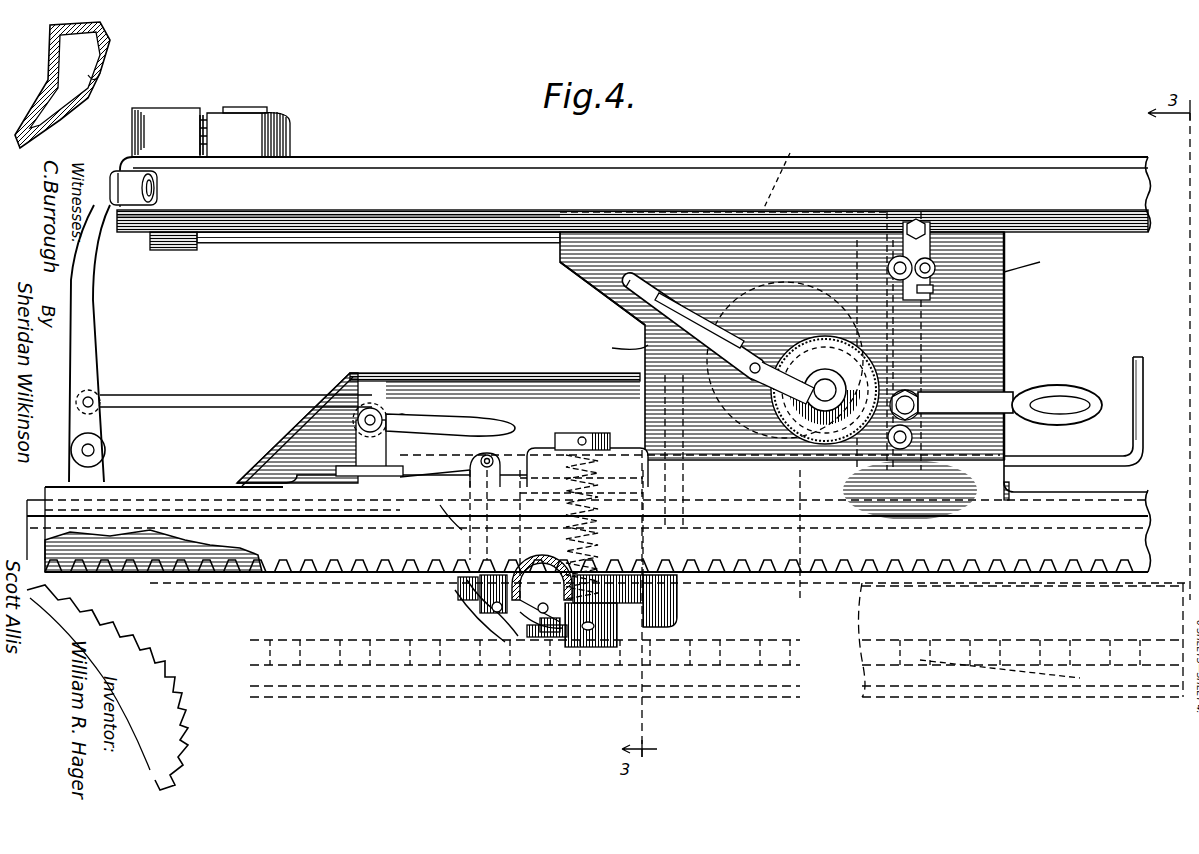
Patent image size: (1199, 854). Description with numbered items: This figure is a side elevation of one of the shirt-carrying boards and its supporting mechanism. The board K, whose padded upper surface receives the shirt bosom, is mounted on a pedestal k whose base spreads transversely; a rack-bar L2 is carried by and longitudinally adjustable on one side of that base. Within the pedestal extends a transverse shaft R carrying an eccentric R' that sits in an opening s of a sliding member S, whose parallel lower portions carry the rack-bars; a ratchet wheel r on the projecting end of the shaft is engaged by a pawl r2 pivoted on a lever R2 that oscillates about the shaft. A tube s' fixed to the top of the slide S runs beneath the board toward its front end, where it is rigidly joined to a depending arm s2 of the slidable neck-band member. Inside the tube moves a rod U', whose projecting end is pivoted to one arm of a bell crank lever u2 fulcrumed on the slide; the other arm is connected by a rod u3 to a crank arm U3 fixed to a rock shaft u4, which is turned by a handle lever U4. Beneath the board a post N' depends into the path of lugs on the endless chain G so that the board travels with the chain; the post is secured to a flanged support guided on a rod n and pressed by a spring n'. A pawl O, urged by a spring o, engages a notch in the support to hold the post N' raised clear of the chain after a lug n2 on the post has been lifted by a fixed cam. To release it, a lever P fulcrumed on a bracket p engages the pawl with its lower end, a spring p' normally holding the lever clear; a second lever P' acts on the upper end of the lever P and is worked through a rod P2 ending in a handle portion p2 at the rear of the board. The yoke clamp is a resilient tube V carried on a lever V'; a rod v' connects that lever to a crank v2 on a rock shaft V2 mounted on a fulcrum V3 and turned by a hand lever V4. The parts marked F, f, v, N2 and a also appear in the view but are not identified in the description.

The frame piece F is at (48, 48).
The flange f is at (88, 75).
The sliding member S is at (880, 212).
The opening s is at (789, 173).
The tube s' is at (338, 245).
The arm s2 is at (157, 250).
The resilient tube V is at (113, 326).
The pivot v is at (113, 456).
The rod v' is at (152, 383).
The lever V' is at (233, 367).
The rock shaft V2 is at (366, 408).
The crank v2 is at (403, 414).
The fulcrum V3 is at (368, 442).
The hand lever V4 is at (437, 428).
The lever P' is at (450, 467).
The shirt board K is at (726, 186).
The pedestal k is at (823, 306).
The rod U' is at (930, 240).
The bell crank lever u2 is at (912, 224).
The rod u3 is at (928, 335).
The rock shaft u4 is at (912, 397).
The crank arm U3 is at (985, 368).
The handle lever U4 is at (1030, 390).
The rod P2 is at (1018, 460).
The handle portion p2 is at (1143, 400).
The transverse shaft R is at (825, 385).
The ratchet wheel r is at (825, 372).
The pawl r2 is at (784, 345).
The eccentric R' is at (718, 335).
The lever R2 is at (638, 300).
The lever P is at (606, 562).
The spring p' is at (424, 529).
The rack-bar L2 is at (213, 548).
The chain G is at (710, 655).
The spring n' is at (587, 447).
The rod n is at (560, 501).
The block N2 is at (640, 598).
The post N' is at (622, 630).
The spring o is at (548, 640).
The bracket p is at (474, 608).
The pawl O is at (520, 636).
The pin a is at (588, 633).
The lug n2 is at (585, 645).